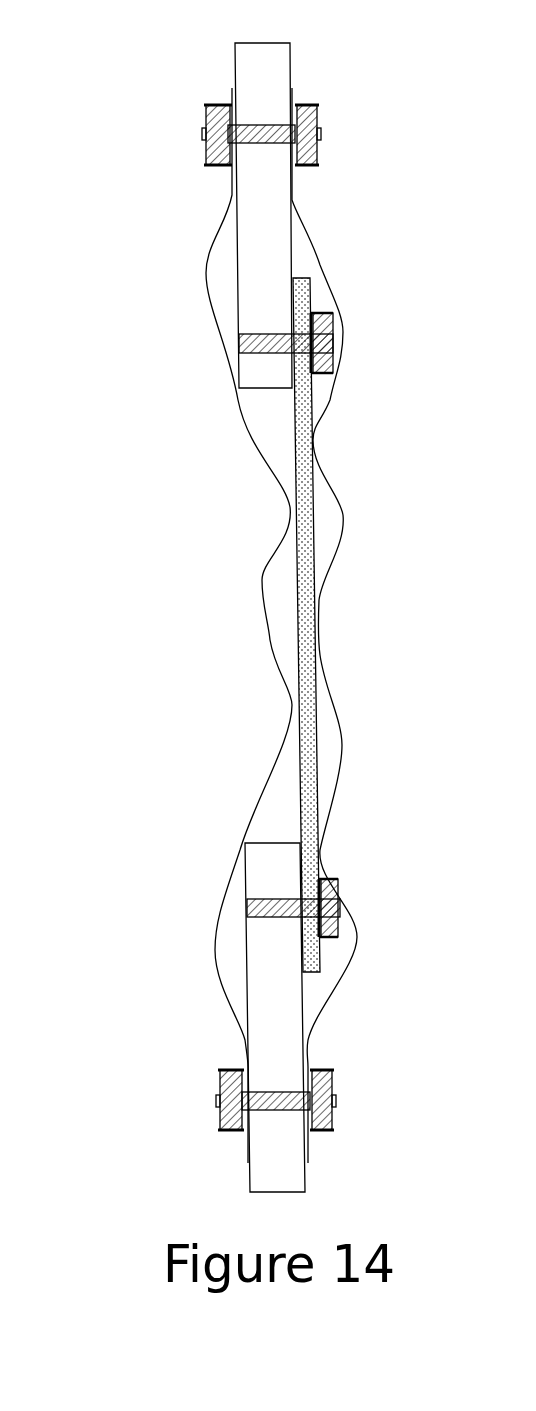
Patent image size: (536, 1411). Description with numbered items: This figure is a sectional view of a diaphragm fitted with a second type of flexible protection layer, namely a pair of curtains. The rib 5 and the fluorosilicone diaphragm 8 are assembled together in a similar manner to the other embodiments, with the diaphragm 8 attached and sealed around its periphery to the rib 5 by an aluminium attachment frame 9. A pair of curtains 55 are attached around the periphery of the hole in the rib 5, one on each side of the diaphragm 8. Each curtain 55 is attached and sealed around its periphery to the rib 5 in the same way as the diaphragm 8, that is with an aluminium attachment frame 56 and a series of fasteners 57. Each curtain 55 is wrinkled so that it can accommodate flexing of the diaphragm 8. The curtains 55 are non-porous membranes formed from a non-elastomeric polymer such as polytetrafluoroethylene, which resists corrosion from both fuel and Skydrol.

The rib 5 is at (260, 225).
The fluorosilicone diaphragm 8 is at (307, 512).
The aluminium attachment frame 9 is at (318, 312).
The curtain 55 is at (320, 255).
The aluminium attachment frame 56 is at (305, 102).
The fastener 57 is at (260, 127).